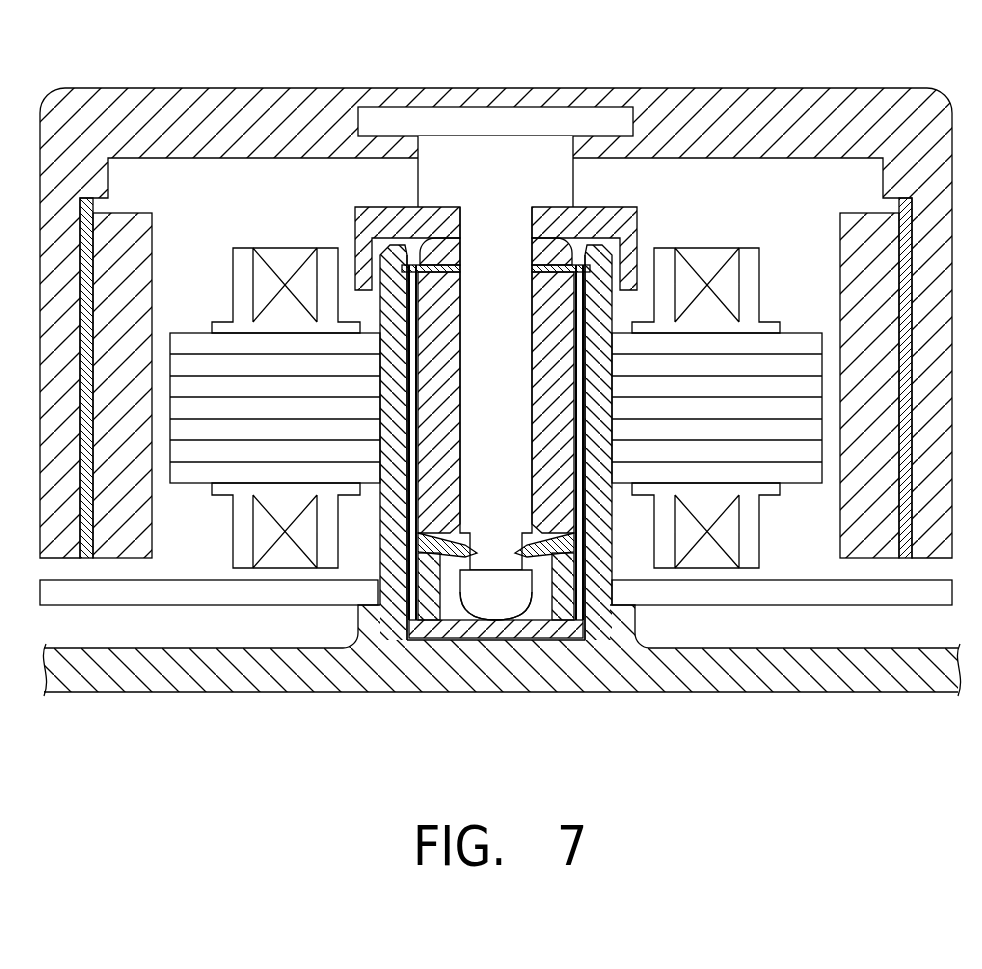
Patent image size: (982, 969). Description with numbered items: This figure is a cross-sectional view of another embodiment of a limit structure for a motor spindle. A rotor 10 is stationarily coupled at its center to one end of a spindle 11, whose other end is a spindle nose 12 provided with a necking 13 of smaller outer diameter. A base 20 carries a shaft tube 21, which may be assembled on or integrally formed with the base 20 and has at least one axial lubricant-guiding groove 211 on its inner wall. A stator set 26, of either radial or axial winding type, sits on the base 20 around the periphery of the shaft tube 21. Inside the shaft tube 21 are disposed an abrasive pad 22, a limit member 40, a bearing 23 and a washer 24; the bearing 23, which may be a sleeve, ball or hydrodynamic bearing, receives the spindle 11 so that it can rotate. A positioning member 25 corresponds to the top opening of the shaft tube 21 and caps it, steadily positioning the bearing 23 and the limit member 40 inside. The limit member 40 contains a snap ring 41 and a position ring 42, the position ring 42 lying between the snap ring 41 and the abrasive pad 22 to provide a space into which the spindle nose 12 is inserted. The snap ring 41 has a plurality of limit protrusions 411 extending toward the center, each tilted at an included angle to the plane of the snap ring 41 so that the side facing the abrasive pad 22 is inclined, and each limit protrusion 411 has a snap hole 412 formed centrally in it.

The rotor 10 is at (746, 127).
The spindle 11 is at (498, 226).
The spindle nose 12 is at (498, 600).
The necking 13 is at (533, 612).
The base 20 is at (782, 668).
The shaft tube 21 is at (605, 467).
The axial lubricant-guiding groove 211 is at (582, 515).
The abrasive pad 22 is at (470, 640).
The bearing 23 is at (440, 376).
The washer 24 is at (412, 266).
The positioning member 25 is at (638, 227).
The stator set 26 is at (198, 347).
The limit member 40 is at (420, 592).
The snap ring 41 is at (462, 541).
The limit protrusion 411 is at (545, 560).
The snap hole 412 is at (477, 553).
The position ring 42 is at (435, 612).